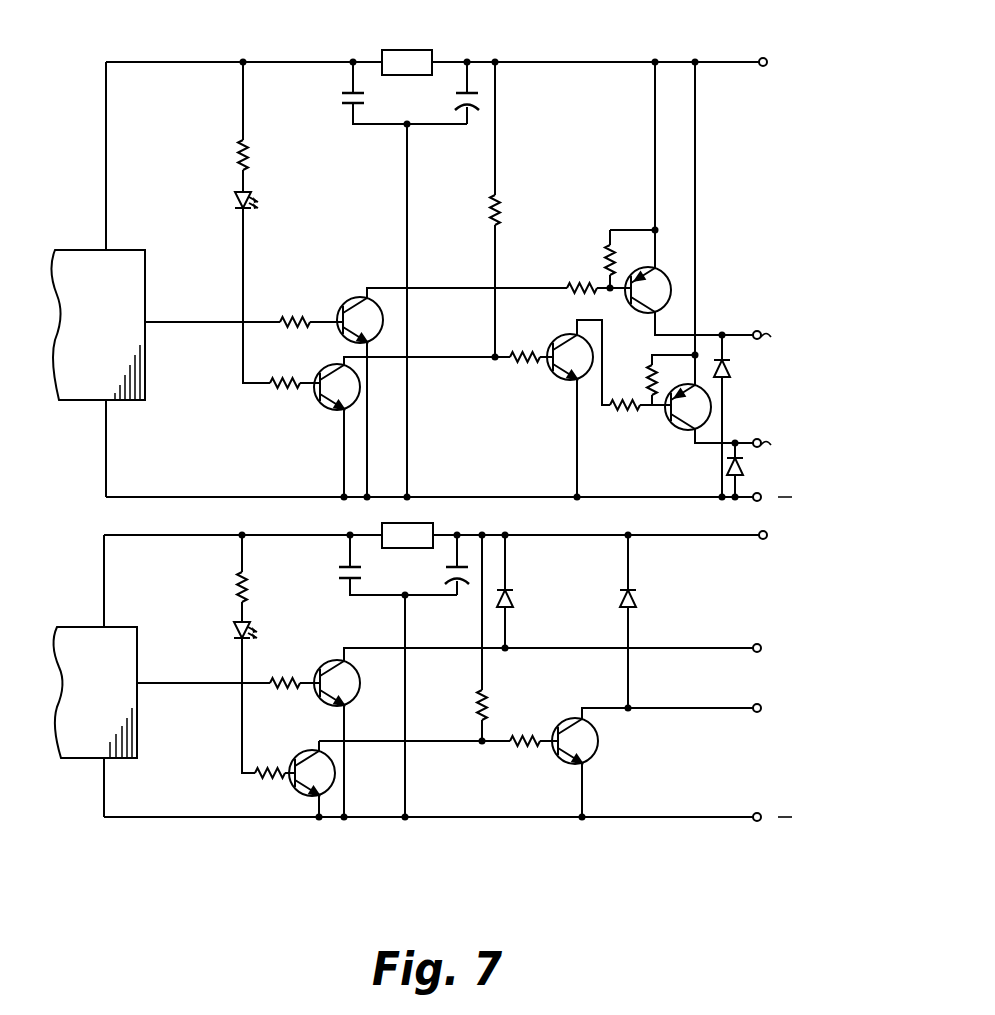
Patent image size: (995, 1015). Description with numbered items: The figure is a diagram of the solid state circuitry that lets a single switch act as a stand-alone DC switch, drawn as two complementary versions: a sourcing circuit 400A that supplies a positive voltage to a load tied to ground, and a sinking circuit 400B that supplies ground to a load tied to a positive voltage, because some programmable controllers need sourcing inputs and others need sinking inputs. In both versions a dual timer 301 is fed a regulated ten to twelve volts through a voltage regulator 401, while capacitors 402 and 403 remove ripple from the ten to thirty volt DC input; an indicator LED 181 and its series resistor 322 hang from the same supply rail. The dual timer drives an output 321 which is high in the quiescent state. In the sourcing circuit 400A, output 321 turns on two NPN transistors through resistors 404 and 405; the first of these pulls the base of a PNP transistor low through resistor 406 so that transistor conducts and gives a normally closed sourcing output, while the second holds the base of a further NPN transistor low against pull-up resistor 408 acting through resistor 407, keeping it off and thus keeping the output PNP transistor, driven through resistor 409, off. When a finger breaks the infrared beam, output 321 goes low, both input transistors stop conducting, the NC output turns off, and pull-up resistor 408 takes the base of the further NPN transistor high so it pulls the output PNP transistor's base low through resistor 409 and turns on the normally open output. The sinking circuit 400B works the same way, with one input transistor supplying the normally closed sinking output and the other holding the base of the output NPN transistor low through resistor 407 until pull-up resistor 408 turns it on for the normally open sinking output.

The complementary sourcing circuit 400A is at (766, 193).
The complementary sinking circuit 400B is at (760, 770).
The dual timer 301 is at (112, 328).
The output 321 is at (146, 320).
The LED current-limiting resistor 322 is at (249, 163).
The indicator LED 181 is at (255, 200).
The voltage regulator 401 is at (412, 50).
The capacitor 402 is at (482, 96).
The capacitor 403 is at (343, 92).
The resistor 404 is at (292, 317).
The resistor 405 is at (286, 391).
The resistor 406 is at (585, 284).
The resistor 407 is at (525, 362).
The pull-up resistor 408 is at (500, 215).
The resistor 409 is at (626, 411).